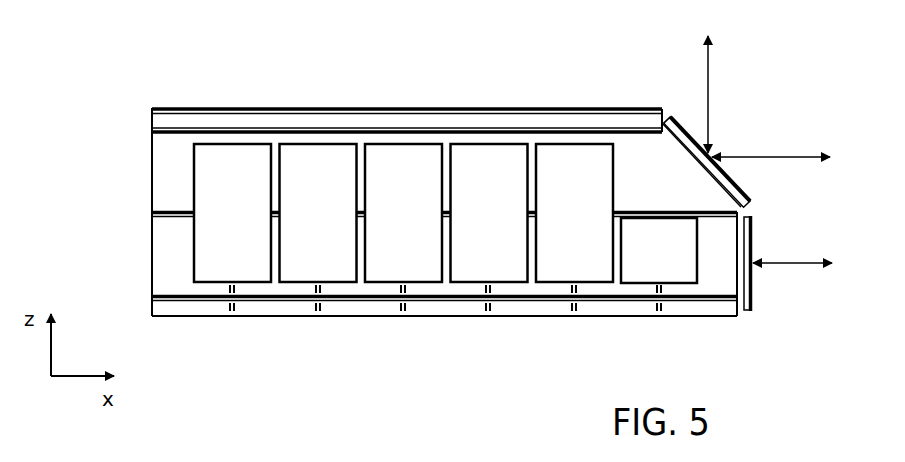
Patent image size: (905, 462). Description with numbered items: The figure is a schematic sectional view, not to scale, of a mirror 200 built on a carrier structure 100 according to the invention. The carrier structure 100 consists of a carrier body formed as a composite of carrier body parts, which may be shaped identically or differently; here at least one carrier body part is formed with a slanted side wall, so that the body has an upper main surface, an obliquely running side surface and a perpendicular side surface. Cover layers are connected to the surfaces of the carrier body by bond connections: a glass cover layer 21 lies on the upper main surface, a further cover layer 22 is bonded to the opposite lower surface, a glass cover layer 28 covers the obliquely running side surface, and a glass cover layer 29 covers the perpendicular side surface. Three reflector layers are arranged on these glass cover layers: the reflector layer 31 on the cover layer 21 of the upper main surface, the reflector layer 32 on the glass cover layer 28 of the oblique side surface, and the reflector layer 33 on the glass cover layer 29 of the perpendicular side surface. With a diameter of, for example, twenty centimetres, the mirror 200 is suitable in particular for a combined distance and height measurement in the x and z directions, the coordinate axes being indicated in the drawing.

The mirror 200 is at (146, 77).
The carrier structure 100 is at (136, 113).
The reflector layer 31 is at (297, 108).
The cover layer 21 is at (423, 124).
The cover layer 22 is at (363, 310).
The glass cover layer 28 is at (688, 150).
The reflector layer 32 is at (740, 186).
The glass cover layer 29 is at (742, 268).
The reflector layer 33 is at (753, 288).